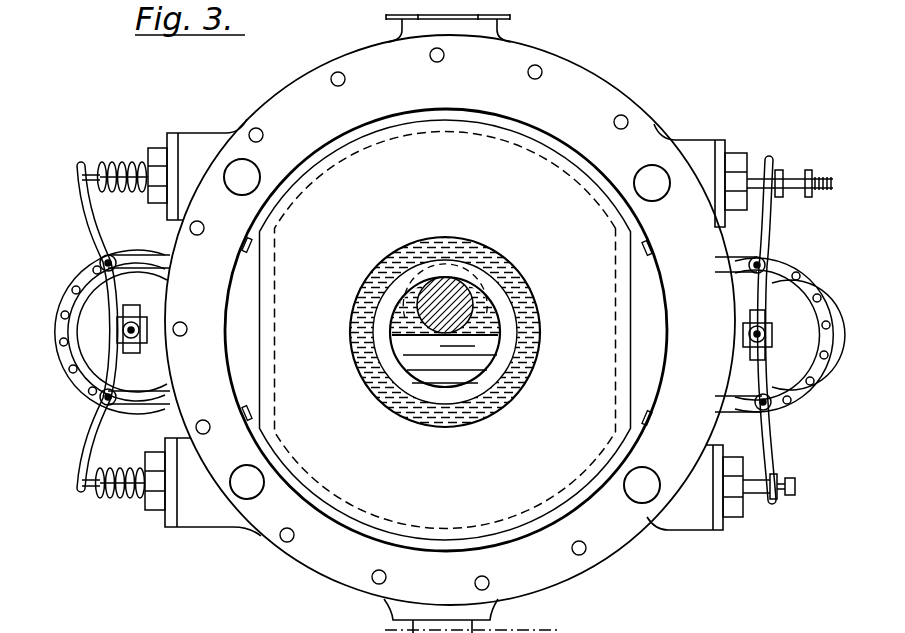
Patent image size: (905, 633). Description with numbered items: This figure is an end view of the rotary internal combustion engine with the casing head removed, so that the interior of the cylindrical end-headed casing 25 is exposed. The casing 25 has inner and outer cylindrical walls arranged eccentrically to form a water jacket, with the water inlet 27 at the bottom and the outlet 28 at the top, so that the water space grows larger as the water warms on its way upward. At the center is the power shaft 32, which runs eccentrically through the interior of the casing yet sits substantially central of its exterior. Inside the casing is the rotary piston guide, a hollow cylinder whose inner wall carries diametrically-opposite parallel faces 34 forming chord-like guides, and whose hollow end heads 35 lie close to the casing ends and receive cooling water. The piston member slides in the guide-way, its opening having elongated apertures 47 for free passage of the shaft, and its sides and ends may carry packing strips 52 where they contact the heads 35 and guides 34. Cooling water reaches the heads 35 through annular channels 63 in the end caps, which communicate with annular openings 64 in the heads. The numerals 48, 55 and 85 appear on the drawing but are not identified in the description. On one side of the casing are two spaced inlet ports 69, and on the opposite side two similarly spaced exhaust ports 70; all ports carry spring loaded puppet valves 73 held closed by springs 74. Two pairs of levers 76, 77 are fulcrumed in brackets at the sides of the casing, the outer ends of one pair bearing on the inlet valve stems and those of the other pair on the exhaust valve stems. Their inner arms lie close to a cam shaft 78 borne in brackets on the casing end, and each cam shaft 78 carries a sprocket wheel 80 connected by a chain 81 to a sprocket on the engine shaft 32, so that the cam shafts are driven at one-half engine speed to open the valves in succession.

The cylindrical end-headed casing 25 is at (622, 542).
The inlet 27 is at (428, 622).
The outlet 28 is at (468, 18).
The power shaft 32 is at (458, 295).
The parallel faces 34 is at (628, 281).
The end heads 35 is at (445, 330).
The elongated apertures 47 is at (423, 348).
The port 48 is at (462, 347).
The packing strips 52 is at (485, 352).
The flange rim 55 is at (288, 182).
The annular channels 63 is at (428, 377).
The annular openings 64 is at (483, 363).
The inlet ports 69 is at (670, 181).
The exhaust ports 70 is at (252, 168).
The spring loaded puppet valves 73 is at (740, 512).
The springs 74 is at (106, 168).
The levers 76 is at (776, 219).
The levers 77 is at (82, 233).
The cam shaft 78 is at (133, 328).
The sprocket wheel 80 is at (110, 272).
The chain 81 is at (66, 293).
The threaded rod 85 is at (774, 179).